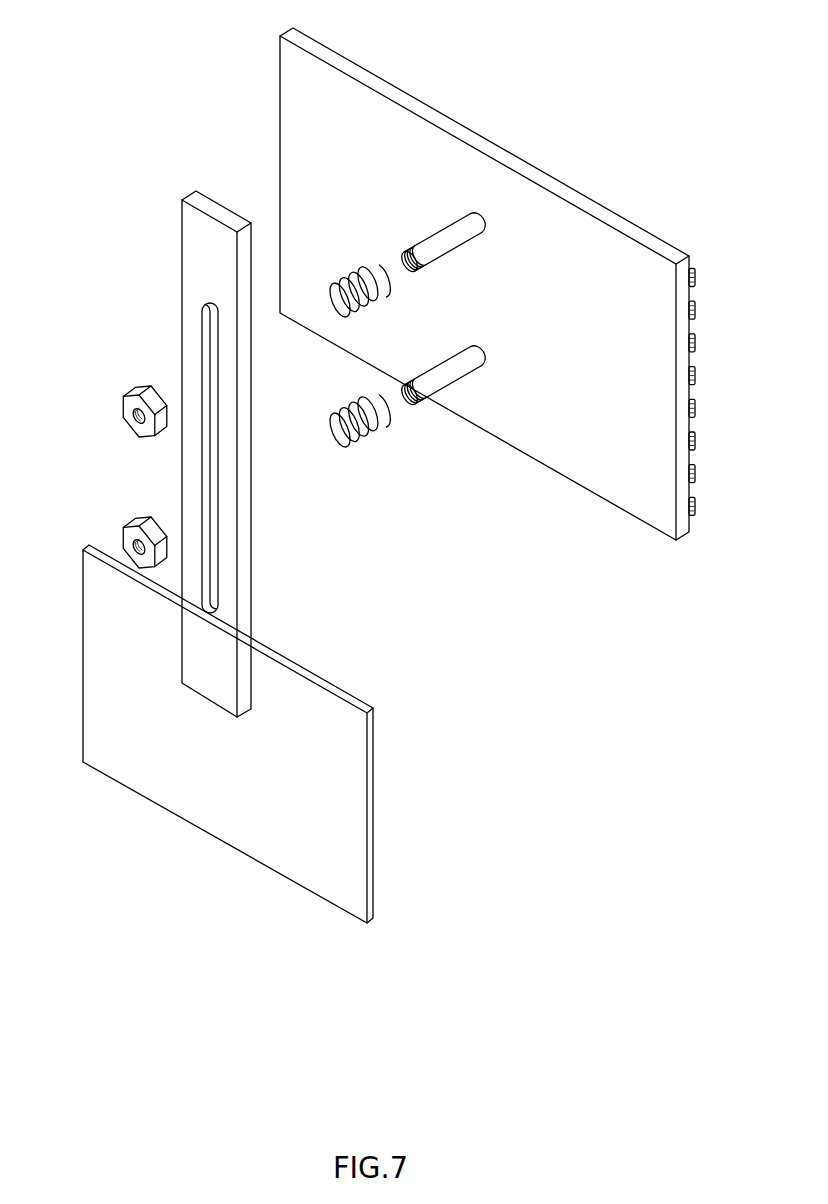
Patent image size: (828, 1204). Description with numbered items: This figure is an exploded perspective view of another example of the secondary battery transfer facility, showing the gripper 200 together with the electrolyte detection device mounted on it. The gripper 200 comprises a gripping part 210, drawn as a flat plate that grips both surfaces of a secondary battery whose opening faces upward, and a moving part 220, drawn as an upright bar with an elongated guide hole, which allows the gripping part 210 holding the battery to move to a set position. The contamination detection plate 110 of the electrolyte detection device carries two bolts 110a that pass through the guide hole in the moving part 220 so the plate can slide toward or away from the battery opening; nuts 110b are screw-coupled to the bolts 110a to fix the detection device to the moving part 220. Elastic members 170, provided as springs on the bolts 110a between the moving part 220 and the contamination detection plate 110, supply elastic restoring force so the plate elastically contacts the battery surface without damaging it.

The contamination detection plate 110 is at (635, 232).
The bolt 110a is at (407, 397).
The nut 110b is at (123, 410).
The elastic member 170 is at (370, 438).
The gripper 200 is at (228, 557).
The gripping part 210 is at (297, 682).
The moving part 220 is at (247, 586).